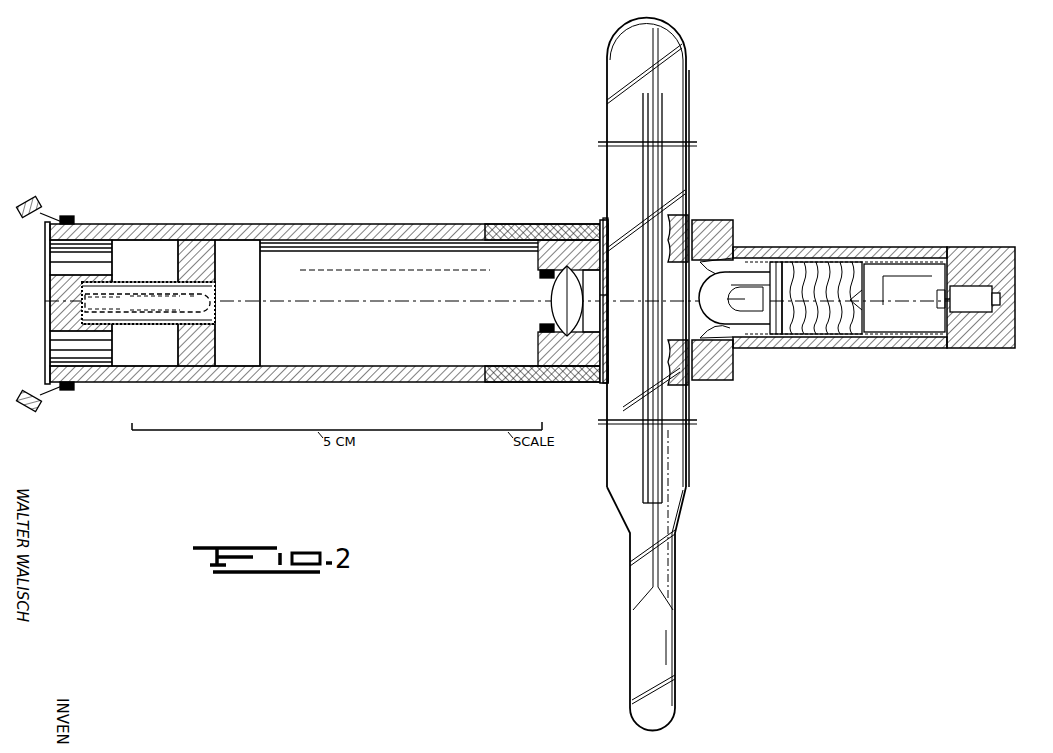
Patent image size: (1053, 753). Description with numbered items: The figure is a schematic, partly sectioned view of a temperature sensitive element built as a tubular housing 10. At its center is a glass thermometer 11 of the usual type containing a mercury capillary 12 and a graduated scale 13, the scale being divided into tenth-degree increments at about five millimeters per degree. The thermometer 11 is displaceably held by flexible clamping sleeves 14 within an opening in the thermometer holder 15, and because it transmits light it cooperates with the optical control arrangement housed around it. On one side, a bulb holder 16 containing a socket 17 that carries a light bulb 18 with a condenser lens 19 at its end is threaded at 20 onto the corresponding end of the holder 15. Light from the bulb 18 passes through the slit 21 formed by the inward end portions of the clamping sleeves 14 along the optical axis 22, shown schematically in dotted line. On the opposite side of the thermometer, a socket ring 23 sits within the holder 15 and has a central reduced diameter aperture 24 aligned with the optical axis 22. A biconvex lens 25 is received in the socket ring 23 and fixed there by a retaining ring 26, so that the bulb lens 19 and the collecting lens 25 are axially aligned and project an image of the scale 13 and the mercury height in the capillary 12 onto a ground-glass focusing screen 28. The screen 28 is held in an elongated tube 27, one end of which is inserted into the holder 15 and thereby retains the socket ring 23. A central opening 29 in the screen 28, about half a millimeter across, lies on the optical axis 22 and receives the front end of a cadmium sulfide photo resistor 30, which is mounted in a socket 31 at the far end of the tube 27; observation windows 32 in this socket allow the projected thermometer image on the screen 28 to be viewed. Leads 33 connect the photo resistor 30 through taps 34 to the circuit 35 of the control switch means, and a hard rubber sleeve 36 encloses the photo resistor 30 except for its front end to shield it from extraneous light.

The tubular housing 10 is at (540, 203).
The thermometer 11 is at (607, 104).
The mercury capillary 12 is at (655, 555).
The graduated scale 13 is at (683, 497).
The flexible clamping sleeve 14 is at (690, 216).
The thermometer holder 15 is at (590, 224).
The bulb holder 16 is at (860, 338).
The socket 17 is at (910, 338).
The light bulb 18 is at (770, 334).
The condenser lens 19 is at (735, 318).
The threaded connection 20 is at (733, 228).
The slit 21 is at (606, 290).
The optical axis 22 is at (455, 302).
The socket ring 23 is at (545, 352).
The central reduced diameter aperture 24 is at (600, 300).
The biconvex lens 25 is at (556, 310).
The retaining ring 26 is at (543, 274).
The elongated tube 27 is at (390, 224).
The focusing screen 28 is at (205, 350).
The central opening 29 is at (213, 327).
The cadmium sulfide photo resistor 30 is at (205, 302).
The socket 31 is at (82, 300).
The observation windows 32 is at (62, 264).
The leads 33 is at (50, 247).
The taps 34 is at (74, 222).
The circuit 35 is at (32, 203).
The hard rubber sleeve 36 is at (213, 283).